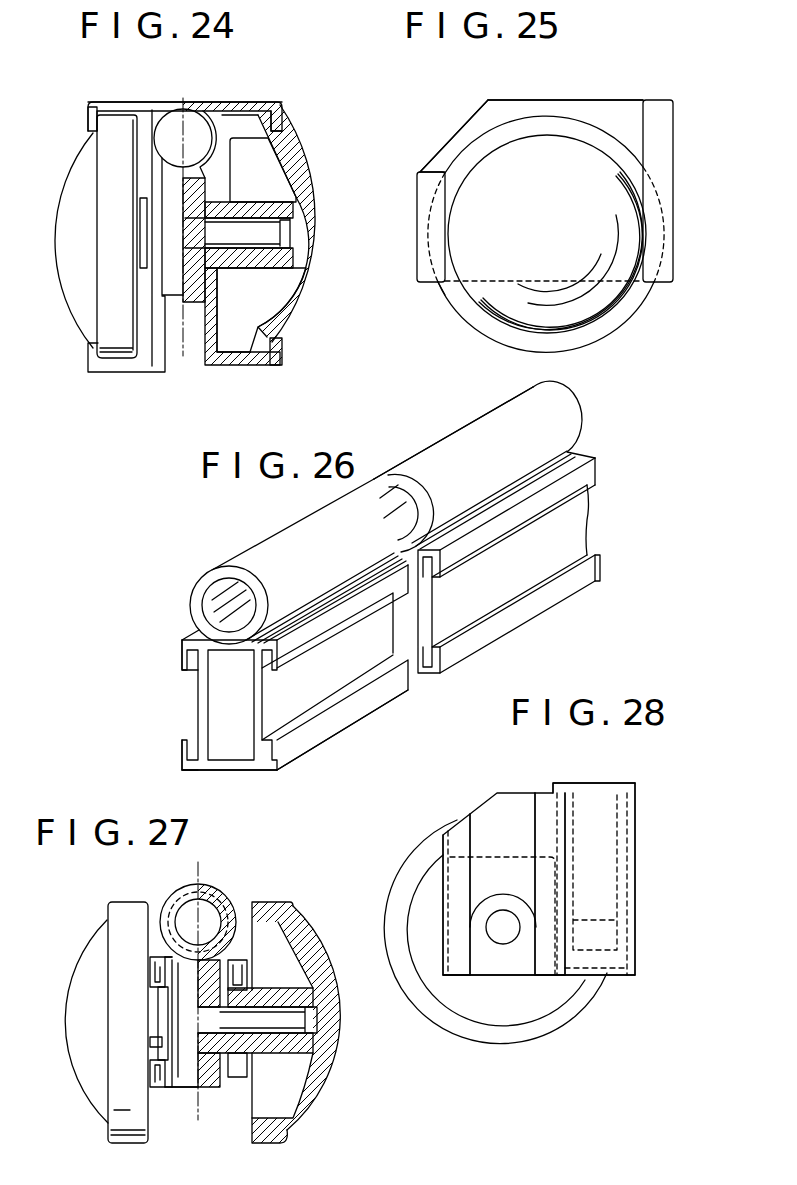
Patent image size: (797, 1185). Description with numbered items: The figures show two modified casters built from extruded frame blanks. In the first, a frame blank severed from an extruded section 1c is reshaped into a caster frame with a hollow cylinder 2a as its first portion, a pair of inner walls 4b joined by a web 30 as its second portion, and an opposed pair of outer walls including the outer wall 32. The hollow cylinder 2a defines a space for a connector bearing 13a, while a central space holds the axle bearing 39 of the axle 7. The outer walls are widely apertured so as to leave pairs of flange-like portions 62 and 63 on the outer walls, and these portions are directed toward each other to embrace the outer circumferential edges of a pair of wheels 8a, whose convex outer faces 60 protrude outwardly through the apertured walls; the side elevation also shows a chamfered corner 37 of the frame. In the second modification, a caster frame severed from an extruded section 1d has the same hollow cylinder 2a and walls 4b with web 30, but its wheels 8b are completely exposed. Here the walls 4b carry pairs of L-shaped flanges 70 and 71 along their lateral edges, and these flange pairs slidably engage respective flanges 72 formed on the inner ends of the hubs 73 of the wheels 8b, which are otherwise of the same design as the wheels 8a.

In FIG. 24, the extruded section 1c is at (129, 95).
In FIG. 25, the extruded section 1c is at (478, 97).
In FIG. 26, the extruded section 1d is at (433, 423).
In FIG. 27, the extruded section 1d is at (224, 897).
In FIG. 28, the extruded section 1d is at (645, 842).
In FIG. 24, the hollow cylinder 2a is at (238, 104).
In FIG. 26, the hollow cylinder 2a is at (196, 598).
In FIG. 27, the hollow cylinder 2a is at (193, 888).
In FIG. 28, the hollow cylinder 2a is at (636, 936).
In FIG. 24, the inner walls 4b is at (150, 168).
In FIG. 25, the inner walls 4b is at (591, 108).
In FIG. 26, the inner walls 4b is at (203, 692).
In FIG. 27, the inner walls 4b is at (172, 972).
In FIG. 28, the inner walls 4b is at (492, 818).
In FIG. 24, the axle 7 is at (262, 242).
In FIG. 27, the axle 7 is at (318, 1018).
In FIG. 28, the axle 7 is at (500, 932).
In FIG. 24, the wheels 8a is at (90, 350).
In FIG. 25, the wheels 8a is at (472, 318).
In FIG. 27, the wheels 8b is at (128, 910).
In FIG. 28, the wheels 8b is at (410, 980).
In FIG. 28, the connector bearing 13a is at (626, 790).
In FIG. 24, the web 30 is at (173, 302).
In FIG. 26, the web 30 is at (225, 771).
In FIG. 27, the web 30 is at (188, 1082).
In FIG. 24, the outer wall 32 is at (262, 101).
In FIG. 25, the chamfered edge 37 is at (447, 143).
In FIG. 24, the axle bearing 39 is at (195, 304).
In FIG. 27, the axle bearing 39 is at (216, 1088).
In FIG. 28, the axle bearing 39 is at (520, 968).
In FIG. 24, the convex outer faces 60 is at (306, 186).
In FIG. 25, the convex outer faces 60 is at (603, 298).
In FIG. 27, the convex outer faces 60 is at (330, 990).
In FIG. 24, the flange-like portions 62 is at (87, 118).
In FIG. 24, the flange-like portions 63 is at (284, 112).
In FIG. 25, the flange-like portions 63 is at (658, 108).
In FIG. 26, the L-shaped flanges 70 is at (181, 661).
In FIG. 27, the L-shaped flanges 70 is at (150, 971).
In FIG. 26, the L-shaped flanges 71 is at (300, 645).
In FIG. 27, the L-shaped flanges 71 is at (240, 975).
In FIG. 28, the L-shaped flanges 71 is at (463, 833).
In FIG. 27, the flanges 72 is at (158, 1003).
In FIG. 27, the hubs 73 is at (278, 995).